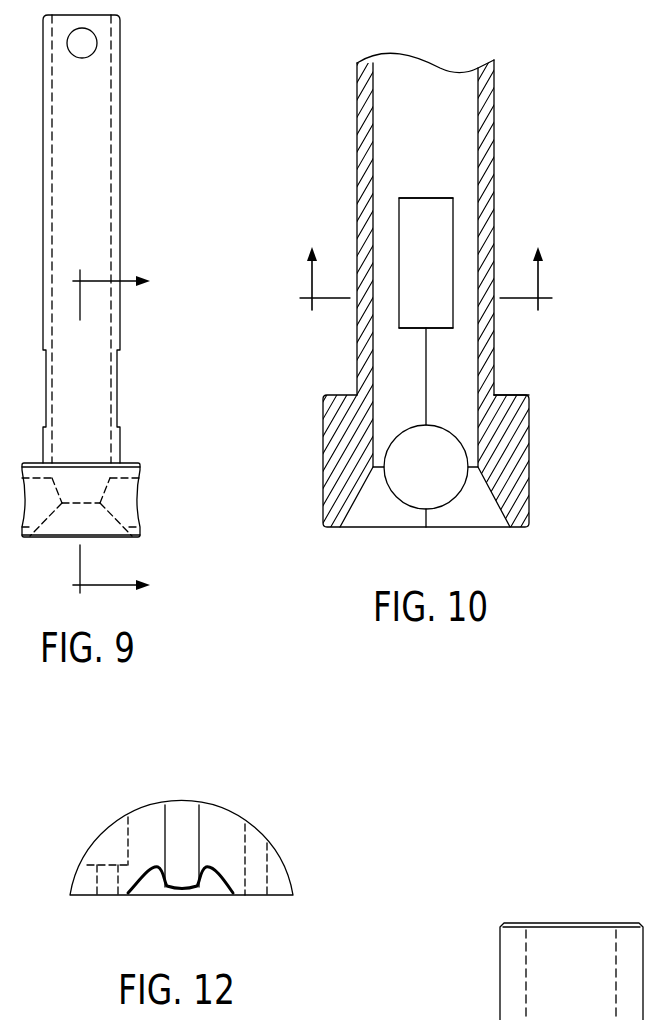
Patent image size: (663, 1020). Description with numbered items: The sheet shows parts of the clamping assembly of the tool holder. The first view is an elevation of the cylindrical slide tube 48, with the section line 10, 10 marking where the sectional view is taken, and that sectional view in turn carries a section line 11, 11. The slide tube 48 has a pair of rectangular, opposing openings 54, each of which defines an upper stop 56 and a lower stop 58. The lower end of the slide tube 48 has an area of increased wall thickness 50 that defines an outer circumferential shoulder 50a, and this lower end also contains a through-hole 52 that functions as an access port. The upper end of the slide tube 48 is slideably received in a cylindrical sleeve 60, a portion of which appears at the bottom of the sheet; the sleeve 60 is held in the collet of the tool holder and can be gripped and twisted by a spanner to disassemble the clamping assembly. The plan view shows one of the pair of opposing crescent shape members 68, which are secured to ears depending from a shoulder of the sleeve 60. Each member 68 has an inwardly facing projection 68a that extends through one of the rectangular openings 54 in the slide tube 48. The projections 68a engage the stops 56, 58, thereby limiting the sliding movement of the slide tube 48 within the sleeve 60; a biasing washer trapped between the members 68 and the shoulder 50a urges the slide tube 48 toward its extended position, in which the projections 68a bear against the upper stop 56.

In FIG. 9, the slide tube 48 is at (87, 105).
In FIG. 10, the slide tube 48 is at (490, 108).
In FIG. 9, the area of increased wall thickness 50 is at (118, 498).
In FIG. 10, the area of increased wall thickness 50 is at (507, 436).
In FIG. 10, the outer circumferential shoulder 50a is at (513, 392).
In FIG. 10, the through-hole 52 is at (437, 484).
In FIG. 10, the rectangular opening 54 is at (465, 229).
In FIG. 10, the upper stop 56 is at (412, 205).
In FIG. 10, the lower stop 58 is at (432, 318).
In FIG. 12, the cylindrical sleeve 60 is at (512, 966).
In FIG. 12, the crescent shape member 68 is at (147, 820).
In FIG. 12, the inwardly facing projection 68a is at (185, 875).
In FIG. 9, the section line 10- 10 is at (136, 433).
In FIG. 10, the section line 11- 11 is at (426, 248).